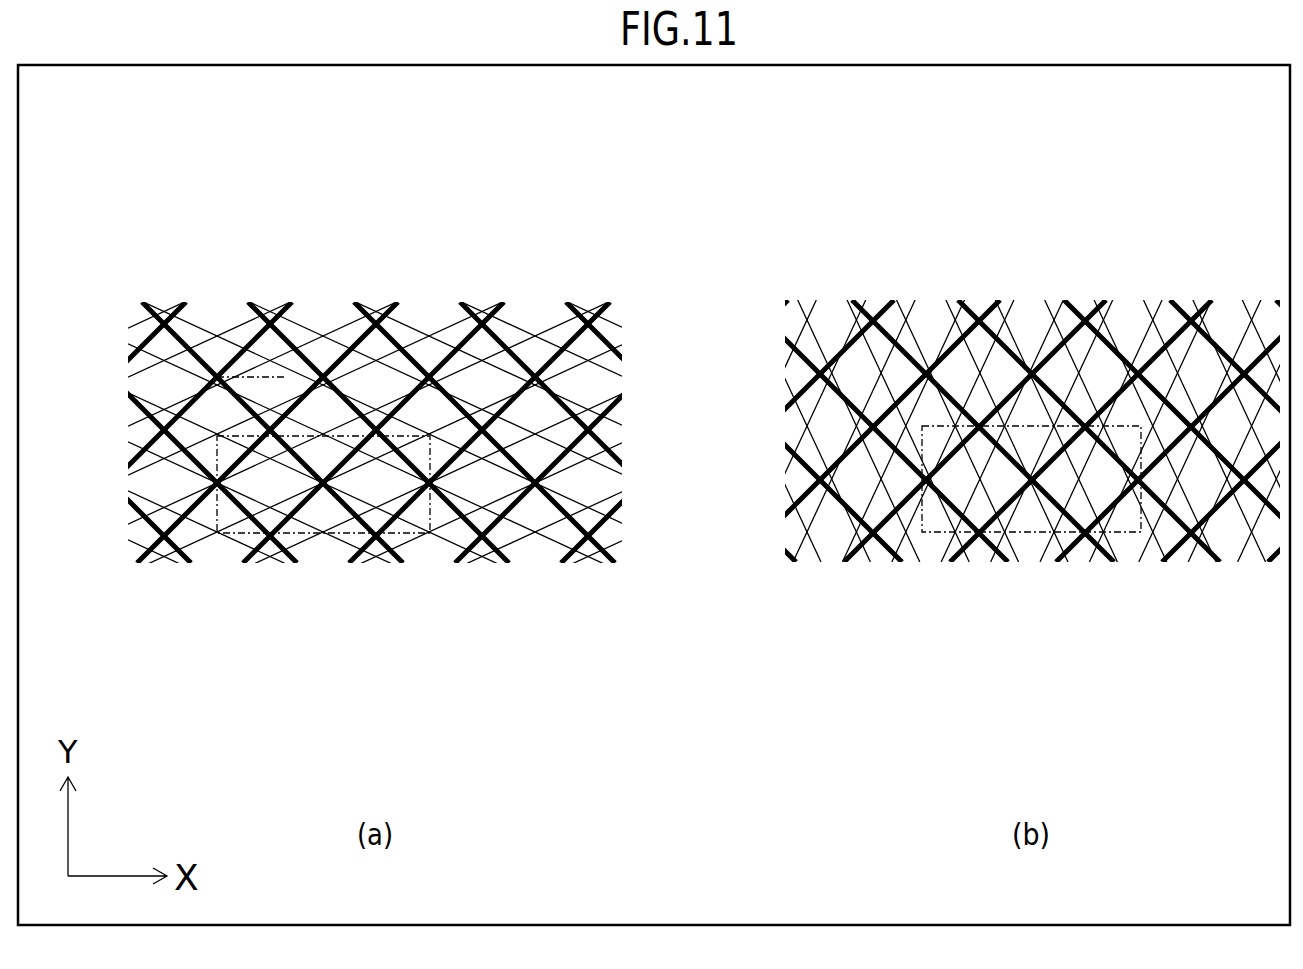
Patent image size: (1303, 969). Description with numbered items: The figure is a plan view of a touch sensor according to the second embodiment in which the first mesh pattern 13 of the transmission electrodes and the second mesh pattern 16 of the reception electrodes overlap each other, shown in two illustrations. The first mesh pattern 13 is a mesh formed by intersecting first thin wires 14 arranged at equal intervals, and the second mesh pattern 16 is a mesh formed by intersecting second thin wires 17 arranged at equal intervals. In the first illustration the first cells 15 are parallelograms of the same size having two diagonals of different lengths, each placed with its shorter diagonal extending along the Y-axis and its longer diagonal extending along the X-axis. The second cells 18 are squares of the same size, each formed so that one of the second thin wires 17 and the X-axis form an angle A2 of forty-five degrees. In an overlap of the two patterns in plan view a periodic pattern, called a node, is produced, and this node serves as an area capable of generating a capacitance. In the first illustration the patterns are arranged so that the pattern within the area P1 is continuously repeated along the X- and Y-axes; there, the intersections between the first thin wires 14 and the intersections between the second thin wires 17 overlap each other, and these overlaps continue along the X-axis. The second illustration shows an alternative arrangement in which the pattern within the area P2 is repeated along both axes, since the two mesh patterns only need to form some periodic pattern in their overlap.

The first mesh pattern 13 is at (651, 355).
The first thin wires 14 is at (352, 372).
The first cells 15 is at (1010, 348).
The second mesh pattern 16 is at (715, 434).
The second thin wires 17 is at (237, 372).
The second cells 18 is at (913, 353).
The angle A2 is at (257, 375).
The area P1 is at (233, 538).
The area P2 is at (968, 535).